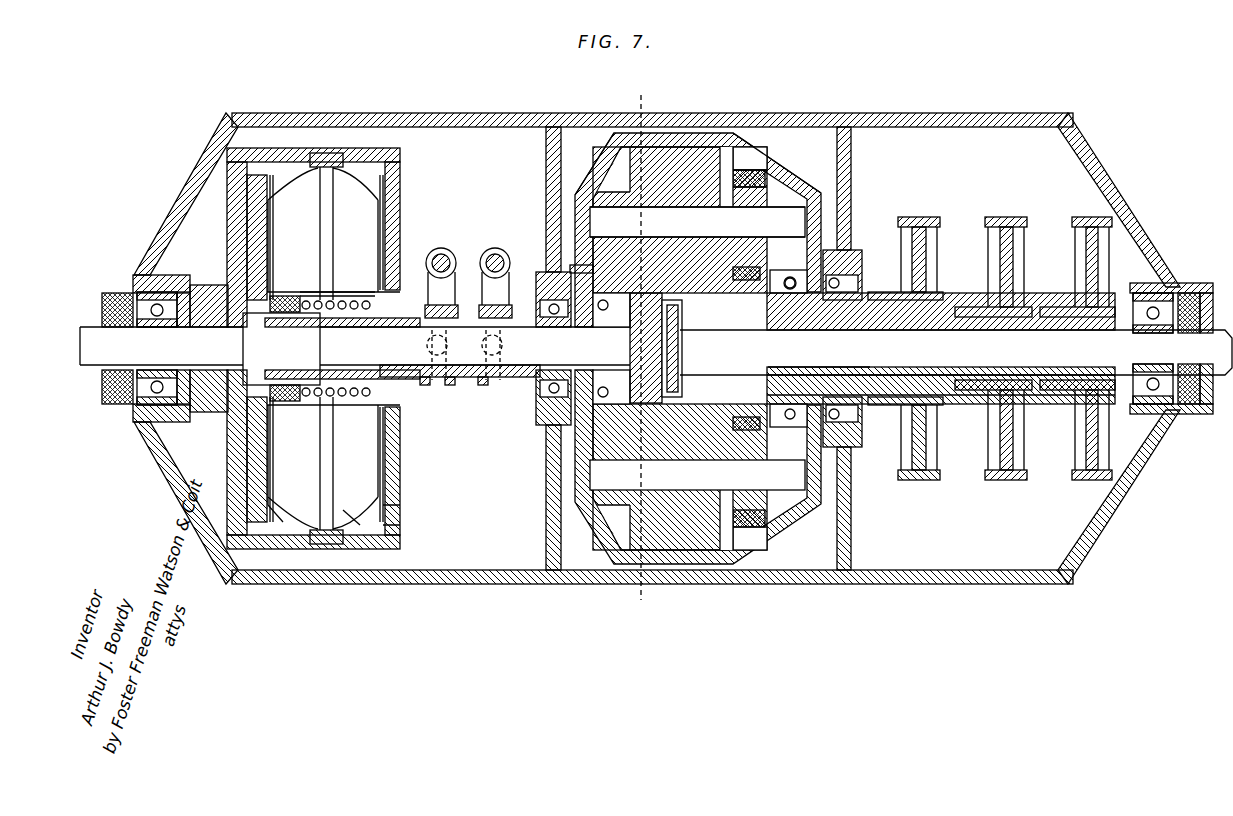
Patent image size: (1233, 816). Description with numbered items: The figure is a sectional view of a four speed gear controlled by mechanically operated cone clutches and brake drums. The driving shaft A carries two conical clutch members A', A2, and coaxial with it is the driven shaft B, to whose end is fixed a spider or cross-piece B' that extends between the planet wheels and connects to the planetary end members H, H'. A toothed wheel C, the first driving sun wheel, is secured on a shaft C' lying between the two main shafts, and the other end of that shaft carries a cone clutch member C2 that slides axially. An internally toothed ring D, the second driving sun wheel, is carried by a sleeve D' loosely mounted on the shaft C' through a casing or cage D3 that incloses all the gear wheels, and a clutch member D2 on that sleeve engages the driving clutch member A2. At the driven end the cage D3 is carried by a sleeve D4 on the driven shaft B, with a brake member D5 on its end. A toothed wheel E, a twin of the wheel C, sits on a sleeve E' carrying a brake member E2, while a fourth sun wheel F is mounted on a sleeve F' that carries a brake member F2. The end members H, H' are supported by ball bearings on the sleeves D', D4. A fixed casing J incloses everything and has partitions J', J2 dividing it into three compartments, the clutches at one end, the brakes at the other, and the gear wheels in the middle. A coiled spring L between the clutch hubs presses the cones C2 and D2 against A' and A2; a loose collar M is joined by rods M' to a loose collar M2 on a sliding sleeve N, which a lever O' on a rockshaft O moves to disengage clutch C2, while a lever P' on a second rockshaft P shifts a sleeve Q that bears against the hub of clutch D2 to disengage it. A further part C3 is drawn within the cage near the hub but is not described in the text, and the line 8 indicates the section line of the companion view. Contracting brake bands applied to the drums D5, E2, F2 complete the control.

The driving shaft A is at (355, 349).
The clutch member A' is at (281, 357).
The clutch member A2 is at (398, 531).
The driven shaft B is at (956, 352).
The spider or cross-piece B' is at (687, 348).
The toothed wheel C is at (632, 348).
The shaft C' is at (683, 215).
The clutch member C2 is at (279, 520).
The spring C3 is at (760, 186).
The toothed ring D is at (845, 321).
The sleeve D' is at (457, 407).
The clutch member D2 is at (356, 528).
The casing or cage D3 is at (598, 162).
The sleeve D4 is at (882, 292).
The brake member D5 is at (923, 217).
The toothed wheel E is at (918, 368).
The sleeve E' is at (985, 430).
The brake member E2 is at (1081, 217).
The sun wheel F is at (819, 360).
The sleeve F' is at (990, 430).
The brake member F2 is at (1006, 217).
The planetary member H is at (564, 247).
The planetary member H' is at (828, 250).
The fixed casing J is at (657, 362).
The partition J' is at (532, 348).
The partition J2 is at (846, 535).
The coiled spring L is at (352, 397).
The loose collar M is at (218, 392).
The rods M' is at (337, 270).
The loose collar M2 is at (418, 298).
The sleeve N is at (440, 392).
The rockshaft O is at (441, 266).
The lever O' is at (450, 327).
The rockshaft P is at (495, 266).
The lever P' is at (505, 327).
The sleeve Q is at (501, 392).
The section line 8 is at (639, 348).